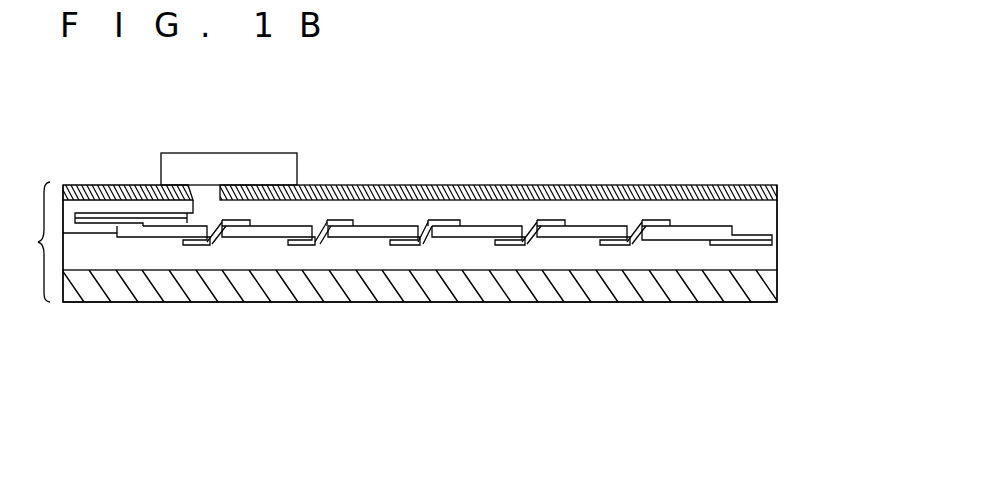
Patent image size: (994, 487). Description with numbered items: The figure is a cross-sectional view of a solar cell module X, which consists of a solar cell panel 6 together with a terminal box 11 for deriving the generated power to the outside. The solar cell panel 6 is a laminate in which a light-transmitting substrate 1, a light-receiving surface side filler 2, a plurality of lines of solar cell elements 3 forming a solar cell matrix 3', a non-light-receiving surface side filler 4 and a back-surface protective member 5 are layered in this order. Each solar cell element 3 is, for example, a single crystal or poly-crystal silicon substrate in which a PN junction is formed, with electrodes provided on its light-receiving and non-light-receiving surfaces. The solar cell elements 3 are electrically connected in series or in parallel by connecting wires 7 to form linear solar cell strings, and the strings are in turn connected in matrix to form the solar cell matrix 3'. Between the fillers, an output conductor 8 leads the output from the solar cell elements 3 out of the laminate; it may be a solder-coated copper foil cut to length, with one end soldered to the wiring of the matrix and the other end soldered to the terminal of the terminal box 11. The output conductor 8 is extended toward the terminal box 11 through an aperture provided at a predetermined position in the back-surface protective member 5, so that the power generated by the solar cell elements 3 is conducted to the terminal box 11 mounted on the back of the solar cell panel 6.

The light-transmitting substrate 1 is at (752, 295).
The light-receiving surface side filler 2 is at (772, 260).
The solar cell element 3 is at (444, 313).
The solar cell matrix 3' is at (446, 137).
The non-light-receiving surface side filler 4 is at (772, 217).
The back-surface protective member 5 is at (717, 185).
The solar cell panel 6 is at (38, 242).
The connecting wire 7 is at (527, 235).
The output conductor 8 is at (158, 213).
The terminal box 11 is at (297, 157).
The solar cell module X is at (362, 343).